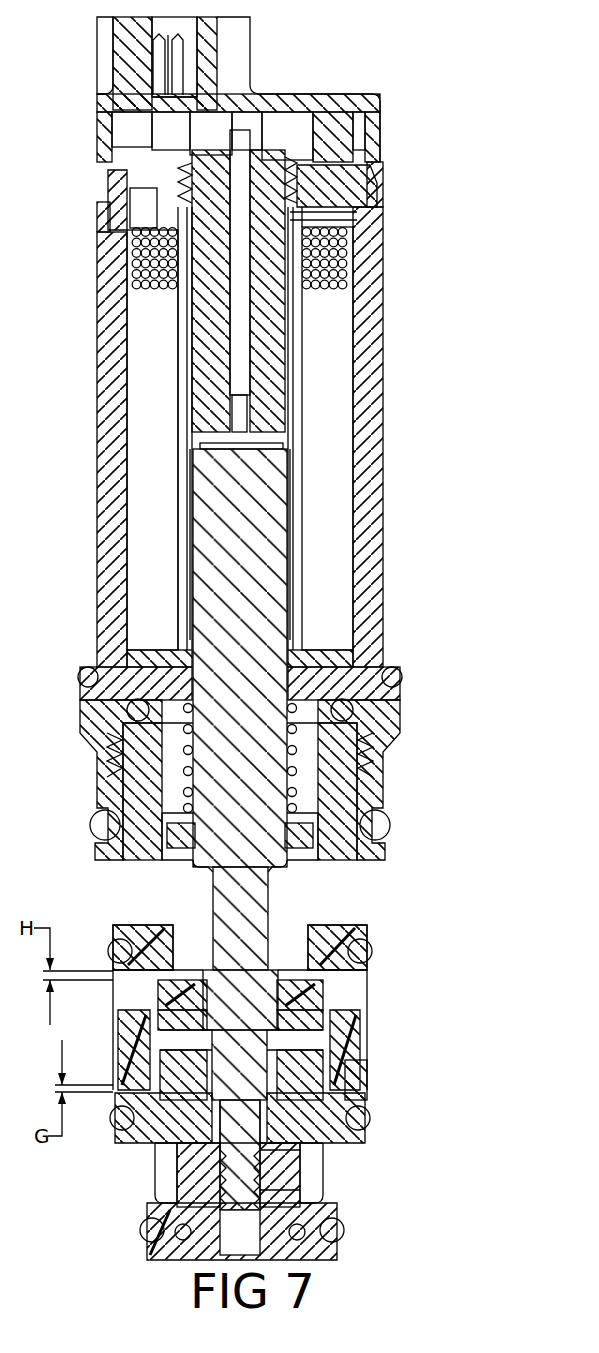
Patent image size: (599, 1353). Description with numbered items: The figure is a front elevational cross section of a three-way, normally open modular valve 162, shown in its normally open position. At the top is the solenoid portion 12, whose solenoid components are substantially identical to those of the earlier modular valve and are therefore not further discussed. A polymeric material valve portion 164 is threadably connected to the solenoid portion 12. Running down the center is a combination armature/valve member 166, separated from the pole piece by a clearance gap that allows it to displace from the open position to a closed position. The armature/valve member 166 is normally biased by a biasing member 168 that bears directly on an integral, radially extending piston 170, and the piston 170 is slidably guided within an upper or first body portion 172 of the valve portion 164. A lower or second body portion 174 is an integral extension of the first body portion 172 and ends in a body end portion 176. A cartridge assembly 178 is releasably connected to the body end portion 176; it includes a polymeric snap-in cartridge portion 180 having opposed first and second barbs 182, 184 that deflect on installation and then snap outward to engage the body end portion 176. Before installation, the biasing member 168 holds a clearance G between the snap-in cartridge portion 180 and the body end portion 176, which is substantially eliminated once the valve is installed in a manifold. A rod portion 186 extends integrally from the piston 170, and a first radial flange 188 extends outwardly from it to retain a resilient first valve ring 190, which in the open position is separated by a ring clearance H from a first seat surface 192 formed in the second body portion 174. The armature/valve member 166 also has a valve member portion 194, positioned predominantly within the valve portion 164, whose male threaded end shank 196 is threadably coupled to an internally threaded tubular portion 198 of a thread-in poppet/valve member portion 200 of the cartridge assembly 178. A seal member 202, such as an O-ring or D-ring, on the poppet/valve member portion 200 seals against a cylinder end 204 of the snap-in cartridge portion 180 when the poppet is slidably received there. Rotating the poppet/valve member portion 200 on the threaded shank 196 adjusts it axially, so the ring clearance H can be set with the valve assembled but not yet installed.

The solenoid portion 12 is at (97, 358).
The normally open modular valve 162 is at (476, 322).
The valve portion 164 is at (412, 884).
The armature/valve member 166 is at (205, 510).
The biasing member 168 is at (290, 752).
The piston 170 is at (175, 815).
The first body portion 172 is at (370, 796).
The second body portion 174 is at (143, 935).
The body end portion 176 is at (356, 1072).
The cartridge assembly 178 is at (417, 1140).
The snap-in cartridge portion 180 is at (362, 1130).
The first barb 182 is at (128, 1032).
The second barb 184 is at (348, 1040).
The rod portion 186 is at (250, 892).
The first radial flange 188 is at (325, 1018).
The first valve ring 190 is at (315, 995).
The first seat surface 192 is at (322, 946).
The valve member portion 194 is at (227, 1118).
The male threaded end shank 196 is at (262, 1176).
The internally threaded tubular portion 198 is at (270, 1210).
The thread-in poppet/valve member portion 200 is at (290, 1252).
The seal member 202 is at (183, 1242).
The cylinder end 204 is at (152, 1252).